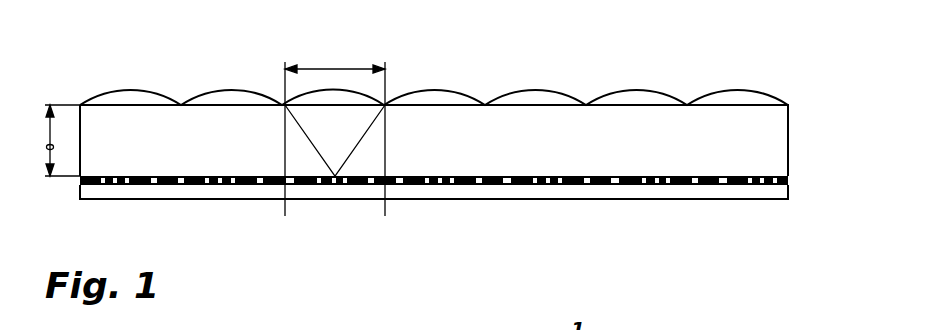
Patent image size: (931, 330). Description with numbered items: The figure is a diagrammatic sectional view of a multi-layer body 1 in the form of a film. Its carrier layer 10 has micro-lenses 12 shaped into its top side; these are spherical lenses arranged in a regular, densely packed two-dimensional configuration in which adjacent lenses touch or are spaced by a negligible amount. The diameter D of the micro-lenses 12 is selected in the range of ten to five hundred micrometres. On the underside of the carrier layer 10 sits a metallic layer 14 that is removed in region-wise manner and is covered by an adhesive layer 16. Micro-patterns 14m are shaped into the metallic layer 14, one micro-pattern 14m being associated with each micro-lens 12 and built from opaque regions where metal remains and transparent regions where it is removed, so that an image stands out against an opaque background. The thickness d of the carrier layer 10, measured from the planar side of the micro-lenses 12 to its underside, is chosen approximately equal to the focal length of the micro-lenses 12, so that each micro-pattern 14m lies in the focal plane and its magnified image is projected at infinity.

The multi-layer body 1 is at (444, 135).
The carrier layer 10 is at (780, 118).
The micro-lenses 12 is at (782, 58).
The metallic layer 14 is at (780, 182).
The micro-patterns 14m is at (385, 218).
The adhesive layer 16 is at (777, 195).
The diameter of the micro-lenses D is at (348, 38).
The thickness of the carrier layer d is at (49, 147).